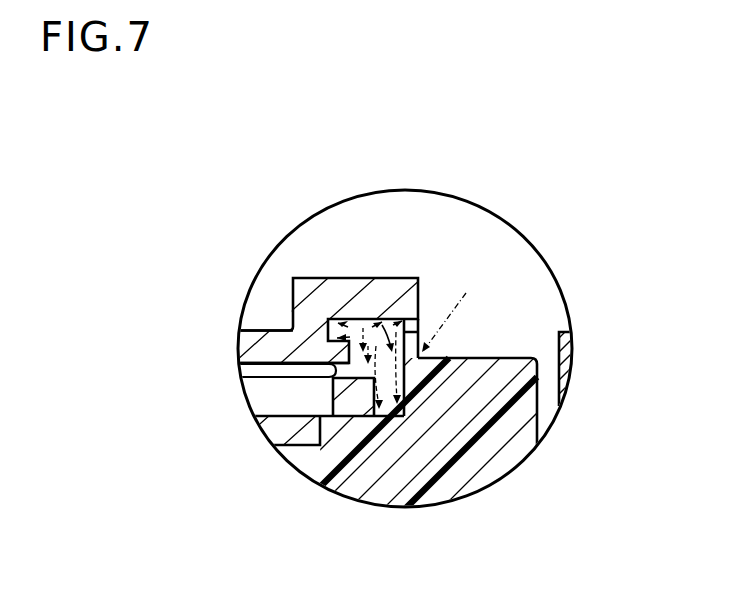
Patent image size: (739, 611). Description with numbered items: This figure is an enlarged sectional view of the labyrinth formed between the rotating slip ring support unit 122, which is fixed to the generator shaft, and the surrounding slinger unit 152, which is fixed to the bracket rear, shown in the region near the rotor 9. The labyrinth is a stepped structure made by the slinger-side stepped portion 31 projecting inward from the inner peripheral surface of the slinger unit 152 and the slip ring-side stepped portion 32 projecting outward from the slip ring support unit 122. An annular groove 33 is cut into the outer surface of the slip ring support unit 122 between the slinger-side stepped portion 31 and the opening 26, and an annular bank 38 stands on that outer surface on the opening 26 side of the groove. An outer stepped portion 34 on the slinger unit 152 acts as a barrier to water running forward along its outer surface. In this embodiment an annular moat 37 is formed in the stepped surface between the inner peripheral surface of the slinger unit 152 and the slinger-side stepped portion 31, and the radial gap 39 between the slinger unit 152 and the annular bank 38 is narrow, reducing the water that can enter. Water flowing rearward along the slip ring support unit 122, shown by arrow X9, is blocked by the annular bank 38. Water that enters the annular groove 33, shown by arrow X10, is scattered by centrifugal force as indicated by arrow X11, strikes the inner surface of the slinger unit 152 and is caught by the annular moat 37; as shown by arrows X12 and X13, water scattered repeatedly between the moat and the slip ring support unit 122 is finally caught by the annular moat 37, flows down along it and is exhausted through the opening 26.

The rotor 9 is at (570, 362).
The opening 26 is at (453, 317).
The slinger-side stepped portion 31 is at (352, 353).
The slip ring-side stepped portion 32 is at (418, 358).
The annular groove 33 is at (437, 420).
The outer stepped portion 34 is at (291, 303).
The annular moat 37 is at (347, 319).
The annular bank 38 is at (571, 335).
The gap 39 is at (418, 332).
The slip ring support unit 122 is at (456, 484).
The slinger unit 152 is at (260, 340).
The arrow X9 is at (462, 325).
The arrow X10 is at (467, 292).
The arrow X11 is at (362, 425).
The arrow X12 is at (376, 319).
The arrow X13 is at (346, 372).